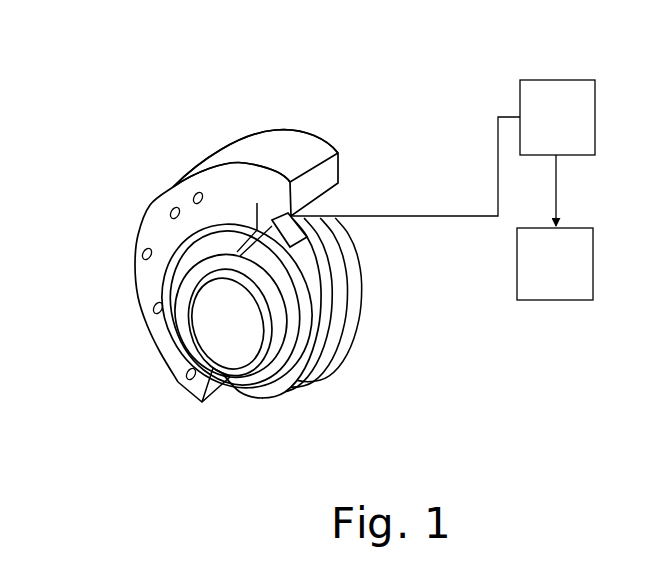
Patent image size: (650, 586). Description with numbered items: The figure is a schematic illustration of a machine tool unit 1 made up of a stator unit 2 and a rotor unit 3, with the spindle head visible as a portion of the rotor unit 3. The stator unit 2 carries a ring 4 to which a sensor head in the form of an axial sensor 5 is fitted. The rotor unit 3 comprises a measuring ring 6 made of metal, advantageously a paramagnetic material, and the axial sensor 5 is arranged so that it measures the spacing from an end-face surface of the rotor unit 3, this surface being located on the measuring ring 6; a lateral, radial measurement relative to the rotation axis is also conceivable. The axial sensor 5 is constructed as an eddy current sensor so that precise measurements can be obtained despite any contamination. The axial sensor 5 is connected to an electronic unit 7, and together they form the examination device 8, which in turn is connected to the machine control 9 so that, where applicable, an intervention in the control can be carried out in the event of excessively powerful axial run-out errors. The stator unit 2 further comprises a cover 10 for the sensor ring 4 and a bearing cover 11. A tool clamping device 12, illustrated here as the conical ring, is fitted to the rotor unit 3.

The machine tool unit 1 is at (287, 108).
The stator unit 2 is at (132, 244).
The rotor unit 3 is at (283, 403).
The ring 4 is at (295, 189).
The axial sensor 5 is at (313, 233).
The measuring ring 6 is at (350, 297).
The electronic unit 7 is at (546, 137).
The examination device 8 is at (503, 100).
The machine control 9 is at (545, 281).
The cover 10 is at (166, 241).
The bearing cover 11 is at (206, 157).
The tool clamping device 12 is at (180, 282).